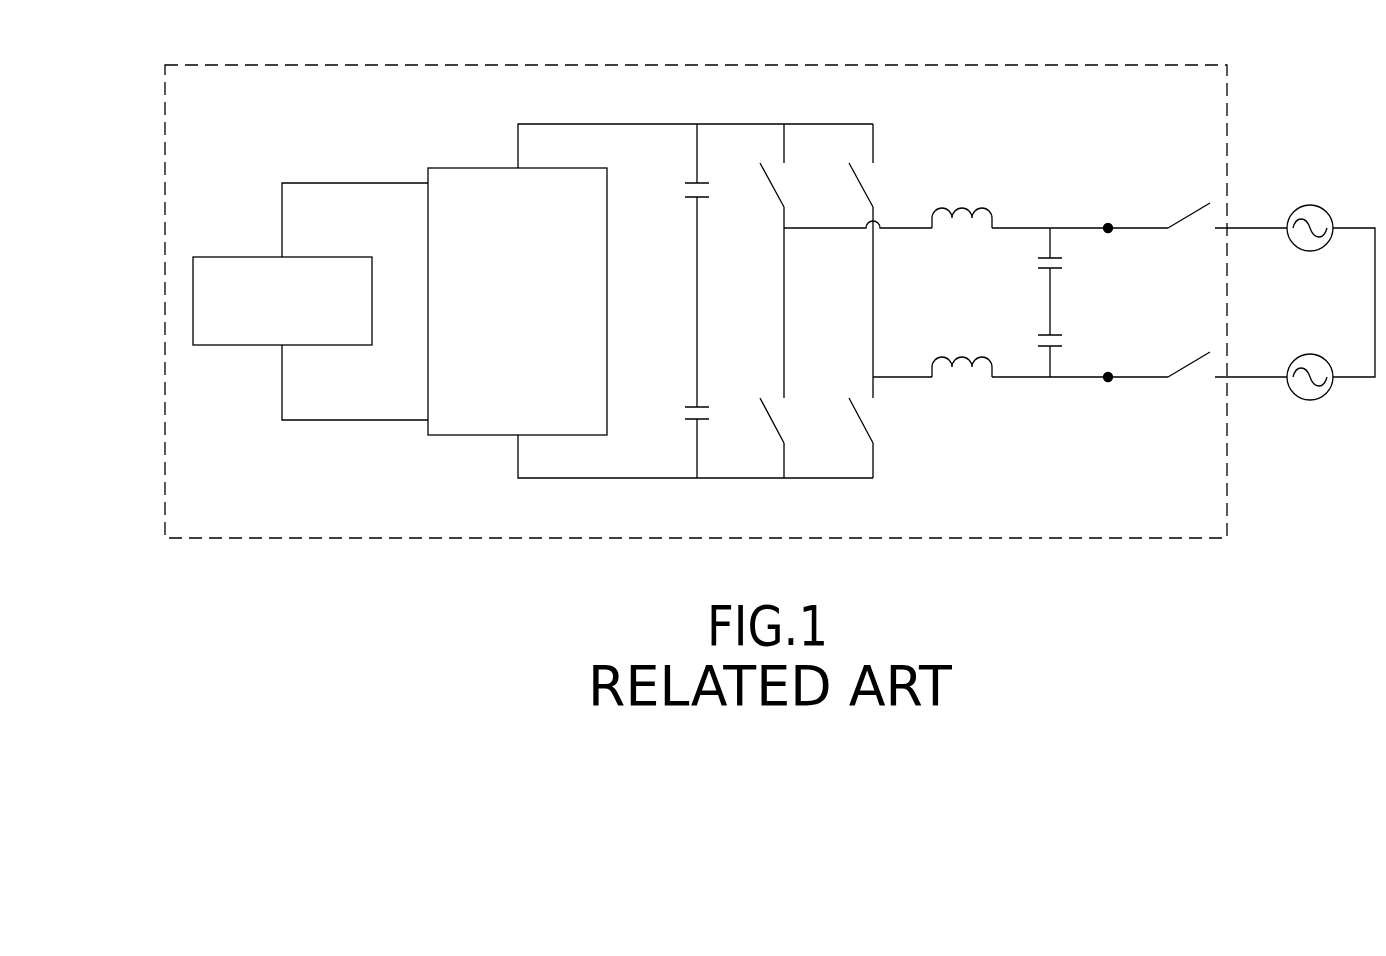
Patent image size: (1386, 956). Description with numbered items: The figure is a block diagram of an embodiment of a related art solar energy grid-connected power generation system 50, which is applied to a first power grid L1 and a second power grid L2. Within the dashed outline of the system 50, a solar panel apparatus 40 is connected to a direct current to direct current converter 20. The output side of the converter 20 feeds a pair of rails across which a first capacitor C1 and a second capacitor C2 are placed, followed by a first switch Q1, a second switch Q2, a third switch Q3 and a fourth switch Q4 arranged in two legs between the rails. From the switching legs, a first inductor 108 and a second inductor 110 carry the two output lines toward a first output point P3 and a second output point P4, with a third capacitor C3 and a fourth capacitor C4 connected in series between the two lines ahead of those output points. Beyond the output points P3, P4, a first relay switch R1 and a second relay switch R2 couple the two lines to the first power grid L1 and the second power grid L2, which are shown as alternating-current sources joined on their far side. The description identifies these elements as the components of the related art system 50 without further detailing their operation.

The related art solar energy grid-connected power generation system 50 is at (667, 70).
The solar panel apparatus 40 is at (270, 262).
The direct current to direct current converter 20 is at (507, 177).
The first inductor 108 is at (962, 217).
The second inductor 110 is at (962, 366).
The first capacitor C1 is at (715, 265).
The second capacitor C2 is at (715, 440).
The third capacitor C3 is at (1068, 281).
The fourth capacitor C4 is at (1068, 352).
The first switch Q1 is at (793, 261).
The second switch Q2 is at (881, 261).
The third switch Q3 is at (793, 438).
The fourth switch Q4 is at (881, 438).
The first output point P3 is at (1110, 214).
The second output point P4 is at (1110, 393).
The first relay switch R1 is at (1220, 207).
The second relay switch R2 is at (1220, 356).
The first power grid L1 is at (1310, 214).
The second power grid L2 is at (1310, 392).